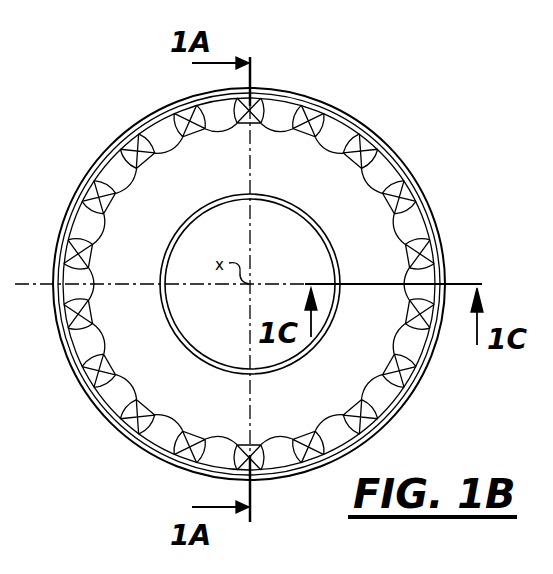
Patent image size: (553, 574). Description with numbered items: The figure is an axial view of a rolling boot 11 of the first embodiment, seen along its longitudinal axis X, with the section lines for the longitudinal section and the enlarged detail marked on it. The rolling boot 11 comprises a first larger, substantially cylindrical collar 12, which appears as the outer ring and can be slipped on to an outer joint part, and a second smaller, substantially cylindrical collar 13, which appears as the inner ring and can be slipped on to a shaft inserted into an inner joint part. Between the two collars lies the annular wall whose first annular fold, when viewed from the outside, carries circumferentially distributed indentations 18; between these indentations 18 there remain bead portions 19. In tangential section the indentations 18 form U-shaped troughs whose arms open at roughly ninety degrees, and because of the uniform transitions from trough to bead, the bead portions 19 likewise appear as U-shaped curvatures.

The rolling boot 11 is at (271, 266).
The first collar 12 is at (173, 467).
The second collar 13 is at (233, 374).
The indentations 18 is at (282, 105).
The bead portions 19 is at (308, 118).